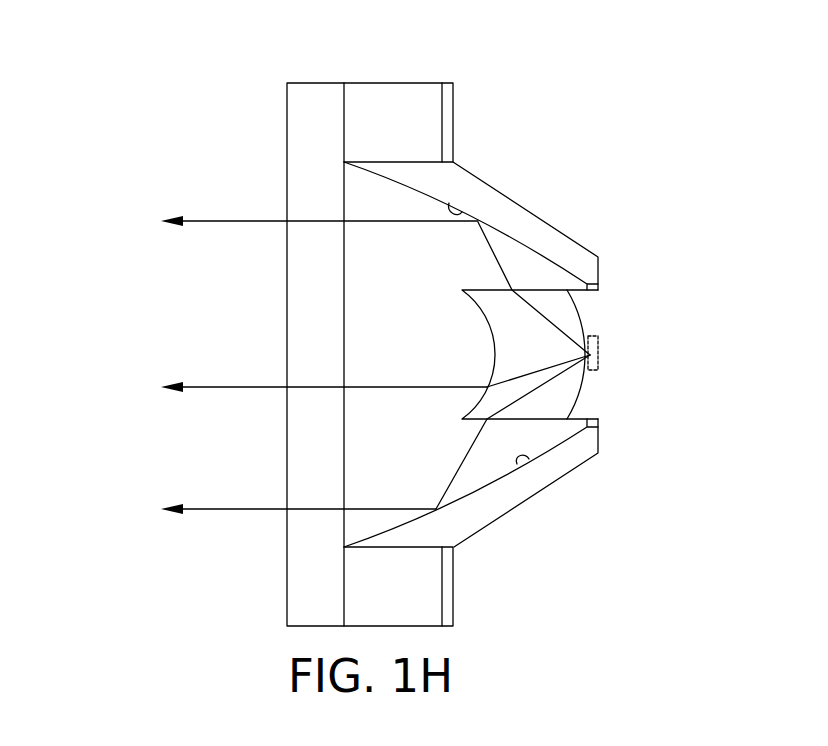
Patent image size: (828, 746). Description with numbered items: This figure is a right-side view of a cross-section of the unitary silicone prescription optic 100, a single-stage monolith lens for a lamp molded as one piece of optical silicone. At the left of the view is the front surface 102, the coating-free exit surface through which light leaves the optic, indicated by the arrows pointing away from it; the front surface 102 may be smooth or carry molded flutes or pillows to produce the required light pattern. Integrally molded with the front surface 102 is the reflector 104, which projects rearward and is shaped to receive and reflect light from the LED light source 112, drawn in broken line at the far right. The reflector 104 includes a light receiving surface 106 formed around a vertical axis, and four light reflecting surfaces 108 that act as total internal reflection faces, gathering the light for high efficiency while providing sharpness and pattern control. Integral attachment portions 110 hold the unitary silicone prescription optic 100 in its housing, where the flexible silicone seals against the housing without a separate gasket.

The unitary silicone prescription optic 100 is at (142, 68).
The front surface 102 is at (287, 162).
The reflector 104 is at (535, 273).
The light receiving surface 106 is at (495, 350).
The light reflecting surface 108 is at (449, 203).
The integral attachment portion 110 is at (438, 83).
The LED light source 112 is at (600, 347).